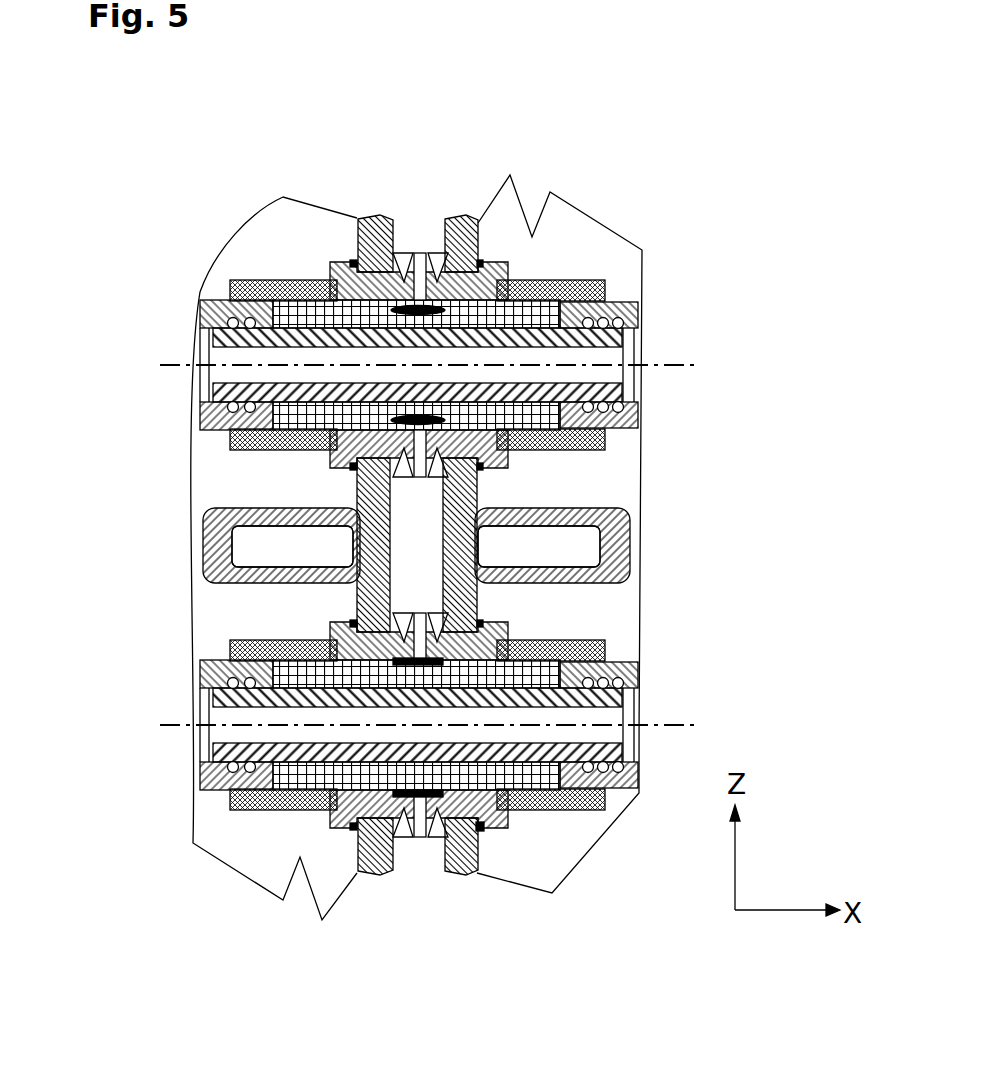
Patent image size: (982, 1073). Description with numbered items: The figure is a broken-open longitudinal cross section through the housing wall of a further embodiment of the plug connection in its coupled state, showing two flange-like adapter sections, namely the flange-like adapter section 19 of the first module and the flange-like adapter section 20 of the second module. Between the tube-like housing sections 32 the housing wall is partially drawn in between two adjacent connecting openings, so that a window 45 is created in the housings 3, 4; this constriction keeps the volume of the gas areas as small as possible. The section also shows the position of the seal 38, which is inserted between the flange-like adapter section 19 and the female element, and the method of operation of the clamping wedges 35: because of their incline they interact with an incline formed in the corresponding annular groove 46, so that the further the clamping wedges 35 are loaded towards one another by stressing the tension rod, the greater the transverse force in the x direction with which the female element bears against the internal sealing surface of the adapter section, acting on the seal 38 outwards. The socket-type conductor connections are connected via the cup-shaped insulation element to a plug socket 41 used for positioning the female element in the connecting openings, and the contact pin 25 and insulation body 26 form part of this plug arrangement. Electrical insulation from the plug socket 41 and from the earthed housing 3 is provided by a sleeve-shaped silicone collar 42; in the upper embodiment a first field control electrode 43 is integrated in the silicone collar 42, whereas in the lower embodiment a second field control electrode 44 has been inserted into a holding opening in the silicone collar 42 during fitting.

The housing of the first module 3 is at (198, 540).
The housing of the second module 4 is at (642, 537).
The flange-like adapter section of the first module 19 is at (355, 487).
The flange-like adapter section of the second module 20 is at (478, 486).
The contact pin 25 is at (625, 340).
The insulation body 26 is at (548, 280).
The housing section 32 is at (595, 508).
The clamping wedge 35 is at (406, 255).
The seal 38 is at (350, 263).
The female connector 41 is at (640, 252).
The silicone collar 42 is at (460, 313).
The first field control electrode 43 is at (400, 413).
The second field control electrode 44 is at (410, 667).
The window 45 is at (257, 542).
The annular groove 46 is at (482, 836).